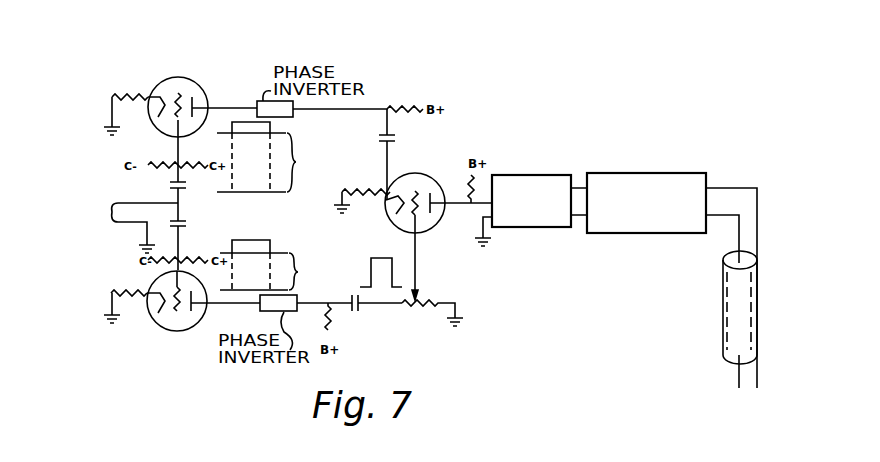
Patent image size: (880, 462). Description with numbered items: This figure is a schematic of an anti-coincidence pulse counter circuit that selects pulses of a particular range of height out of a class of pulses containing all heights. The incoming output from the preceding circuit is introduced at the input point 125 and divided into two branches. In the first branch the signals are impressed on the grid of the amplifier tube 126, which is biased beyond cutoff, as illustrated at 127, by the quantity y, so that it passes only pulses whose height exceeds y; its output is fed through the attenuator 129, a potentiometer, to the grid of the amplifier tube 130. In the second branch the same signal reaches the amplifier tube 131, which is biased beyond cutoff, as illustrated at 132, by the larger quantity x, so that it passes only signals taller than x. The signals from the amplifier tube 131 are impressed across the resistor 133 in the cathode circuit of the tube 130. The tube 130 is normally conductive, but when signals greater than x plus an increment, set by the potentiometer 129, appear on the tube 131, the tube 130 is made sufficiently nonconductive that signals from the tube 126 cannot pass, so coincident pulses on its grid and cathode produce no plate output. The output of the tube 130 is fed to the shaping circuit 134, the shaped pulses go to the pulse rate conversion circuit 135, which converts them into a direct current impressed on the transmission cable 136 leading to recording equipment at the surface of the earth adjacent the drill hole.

The circuit input point 125 is at (111, 213).
The amplifier tube 126 is at (201, 319).
The bias illustration 127 is at (290, 254).
The attenuator 129 is at (418, 307).
The amplifier tube 130 is at (419, 174).
The amplifier tube 131 is at (204, 90).
The bias illustration 132 is at (288, 134).
The resistor 133 is at (386, 195).
The shaping circuit 134 is at (518, 175).
The pulse rate conversion circuit 135 is at (644, 173).
The transmission cable 136 is at (723, 324).